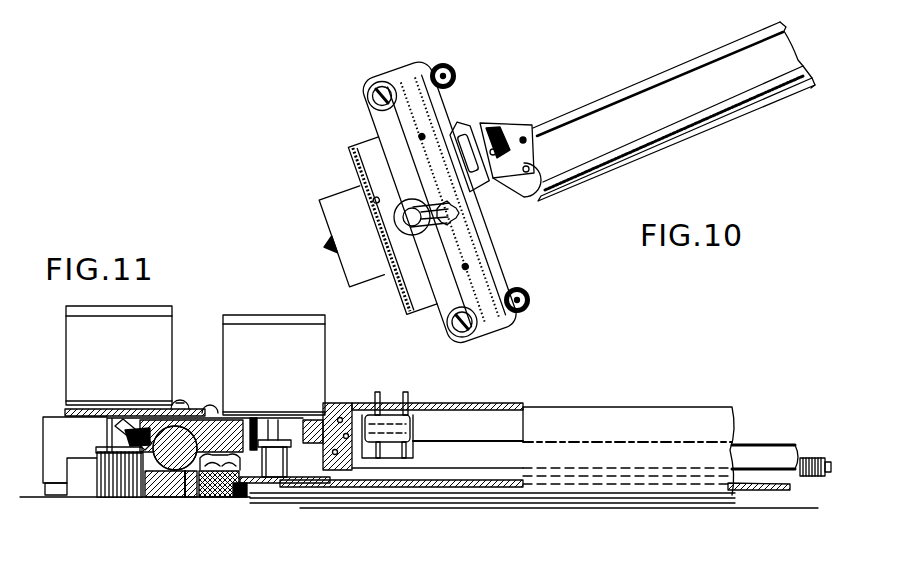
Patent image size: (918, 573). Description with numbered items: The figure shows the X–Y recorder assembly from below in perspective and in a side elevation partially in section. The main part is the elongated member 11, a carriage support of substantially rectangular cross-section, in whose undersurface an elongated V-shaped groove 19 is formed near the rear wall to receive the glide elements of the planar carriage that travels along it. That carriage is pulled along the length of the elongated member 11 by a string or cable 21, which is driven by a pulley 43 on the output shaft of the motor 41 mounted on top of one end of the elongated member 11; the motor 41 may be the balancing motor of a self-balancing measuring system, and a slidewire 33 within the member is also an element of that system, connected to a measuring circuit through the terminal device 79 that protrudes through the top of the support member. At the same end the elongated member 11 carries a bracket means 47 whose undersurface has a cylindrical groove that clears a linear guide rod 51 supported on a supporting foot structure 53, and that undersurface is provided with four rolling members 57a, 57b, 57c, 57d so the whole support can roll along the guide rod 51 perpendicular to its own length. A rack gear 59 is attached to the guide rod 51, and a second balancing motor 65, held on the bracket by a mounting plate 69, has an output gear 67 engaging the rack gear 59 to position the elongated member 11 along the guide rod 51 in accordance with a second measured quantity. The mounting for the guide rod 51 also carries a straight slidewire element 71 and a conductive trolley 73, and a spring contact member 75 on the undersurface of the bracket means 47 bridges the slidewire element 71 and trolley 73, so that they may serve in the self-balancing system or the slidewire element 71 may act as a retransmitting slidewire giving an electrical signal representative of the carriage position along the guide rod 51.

In FIG. 10, the elongated member 11 is at (737, 44).
In FIG. 11, the elongated member 11 is at (638, 408).
In FIG. 10, the V-shaped groove 19 is at (803, 68).
In FIG. 11, the string or cable 21 is at (393, 489).
In FIG. 11, the slidewire 33 is at (798, 478).
In FIG. 11, the motor 41 is at (280, 315).
In FIG. 11, the pulley 43 is at (266, 485).
In FIG. 10, the bracket means 47 is at (416, 71).
In FIG. 11, the bracket means 47 is at (200, 407).
In FIG. 11, the linear guide rod 51 is at (188, 493).
In FIG. 11, the supporting foot structure 53 is at (43, 453).
In FIG. 10, the rolling member 57a is at (367, 97).
In FIG. 10, the rolling member 57b is at (457, 73).
In FIG. 10, the rolling member 57c is at (452, 336).
In FIG. 10, the rolling member 57d is at (529, 302).
In FIG. 11, the rack gear 59 is at (155, 490).
In FIG. 10, the motor 65 is at (328, 200).
In FIG. 11, the motor 65 is at (158, 307).
In FIG. 10, the output gear 67 is at (437, 241).
In FIG. 11, the output gear 67 is at (97, 486).
In FIG. 10, the mounting plate 69 is at (358, 147).
In FIG. 11, the slidewire element 71 is at (241, 491).
In FIG. 11, the conductive trolley 73 is at (216, 498).
In FIG. 10, the spring contact member 75 is at (478, 127).
In FIG. 11, the spring contact member 75 is at (231, 459).
In FIG. 11, the terminal device 79 is at (384, 418).